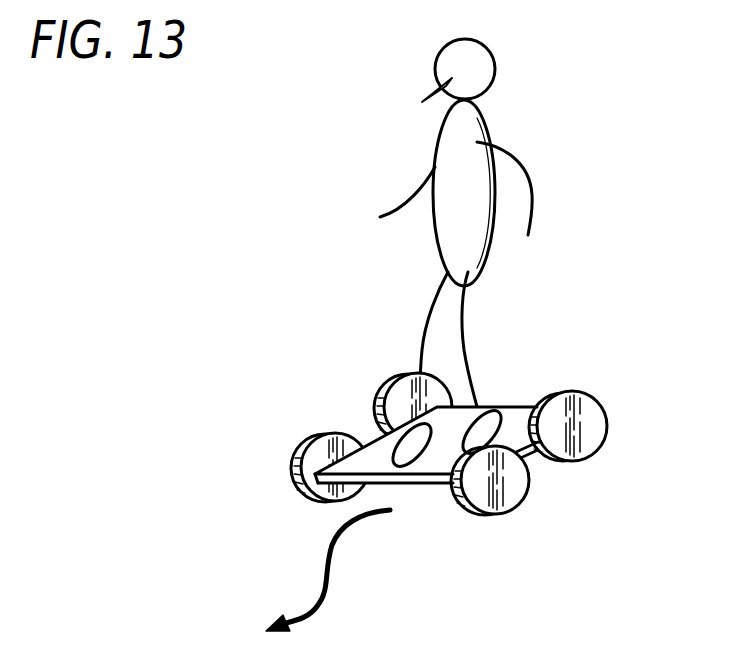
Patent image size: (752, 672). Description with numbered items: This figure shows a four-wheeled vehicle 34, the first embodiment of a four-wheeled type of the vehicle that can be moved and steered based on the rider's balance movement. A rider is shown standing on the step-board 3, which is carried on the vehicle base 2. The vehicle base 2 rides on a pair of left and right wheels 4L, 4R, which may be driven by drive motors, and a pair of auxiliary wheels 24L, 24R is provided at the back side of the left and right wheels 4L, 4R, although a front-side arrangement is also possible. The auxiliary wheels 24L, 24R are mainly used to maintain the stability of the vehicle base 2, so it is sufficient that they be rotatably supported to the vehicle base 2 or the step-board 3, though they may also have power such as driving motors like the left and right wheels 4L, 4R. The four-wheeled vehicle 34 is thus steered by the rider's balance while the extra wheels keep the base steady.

The vehicle base 2 is at (415, 485).
The step-board 3 is at (380, 455).
The right wheel 4R is at (297, 462).
The left wheel 4L is at (508, 493).
The right auxiliary wheel 24R is at (400, 375).
The left auxiliary wheel 24L is at (593, 417).
The four-wheeled vehicle 34 is at (296, 527).